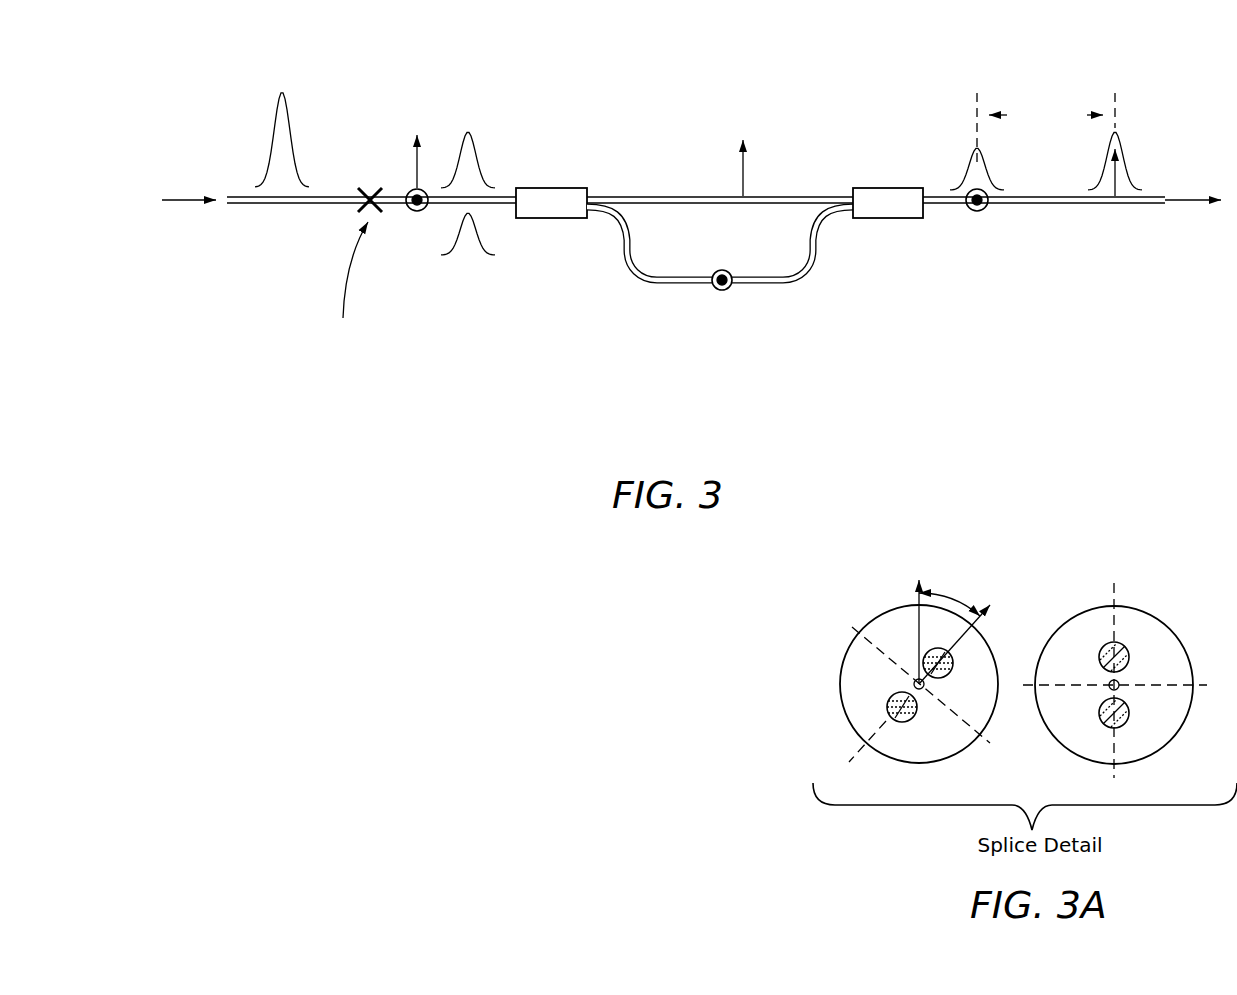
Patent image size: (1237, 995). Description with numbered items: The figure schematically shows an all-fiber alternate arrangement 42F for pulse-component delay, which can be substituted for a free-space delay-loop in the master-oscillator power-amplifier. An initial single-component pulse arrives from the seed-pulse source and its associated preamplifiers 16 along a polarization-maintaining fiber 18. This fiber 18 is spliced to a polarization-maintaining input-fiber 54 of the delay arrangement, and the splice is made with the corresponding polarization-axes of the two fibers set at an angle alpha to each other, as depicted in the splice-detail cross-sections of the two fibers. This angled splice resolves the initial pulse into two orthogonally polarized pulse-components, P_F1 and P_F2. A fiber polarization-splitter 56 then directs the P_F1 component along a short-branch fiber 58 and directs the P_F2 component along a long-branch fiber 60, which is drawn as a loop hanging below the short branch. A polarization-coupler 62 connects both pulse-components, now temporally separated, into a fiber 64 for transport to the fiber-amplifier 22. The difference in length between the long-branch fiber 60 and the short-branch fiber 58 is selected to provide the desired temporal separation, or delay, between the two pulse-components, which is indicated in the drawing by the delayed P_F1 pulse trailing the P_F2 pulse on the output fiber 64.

In FIG. 3, the preamplifiers 16 is at (192, 232).
In FIG. 3, the polarization-maintaining fiber 18 is at (274, 212).
In FIG. 3A, the polarization-maintaining fiber 18 is at (829, 655).
In FIG. 3, the fiber-amplifier 22 is at (1192, 231).
In FIG. 3, the all-fiber alternate arrangement 42F is at (681, 283).
In FIG. 3, the polarization-maintaining input-fiber 54 is at (394, 214).
In FIG. 3A, the polarization-maintaining input-fiber 54 is at (1154, 602).
In FIG. 3, the fiber polarization-splitter 56 is at (543, 217).
In FIG. 3, the short-branch fiber 58 is at (708, 196).
In FIG. 3, the long-branch fiber 60 is at (673, 284).
In FIG. 3, the polarization-coupler 62 is at (873, 214).
In FIG. 3, the fiber 64 is at (940, 205).